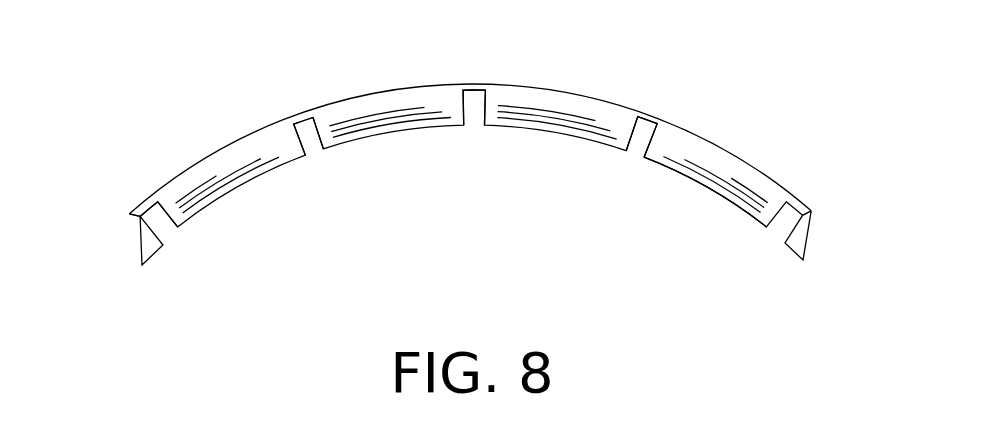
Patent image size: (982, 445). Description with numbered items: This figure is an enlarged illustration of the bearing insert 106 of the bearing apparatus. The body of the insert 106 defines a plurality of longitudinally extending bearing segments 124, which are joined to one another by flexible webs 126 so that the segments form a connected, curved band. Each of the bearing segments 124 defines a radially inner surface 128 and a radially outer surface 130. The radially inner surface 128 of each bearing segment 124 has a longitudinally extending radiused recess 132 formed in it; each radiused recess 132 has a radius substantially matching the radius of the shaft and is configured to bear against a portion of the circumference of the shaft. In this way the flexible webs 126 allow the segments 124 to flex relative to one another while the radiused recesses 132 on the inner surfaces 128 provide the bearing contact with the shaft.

The insert 106 is at (736, 118).
The bearing segments 124 is at (218, 160).
The flexible webs 126 is at (145, 213).
The radially inner surface 128 is at (743, 218).
The radially outer surface 130 is at (797, 193).
The radiused recess 132 is at (675, 183).